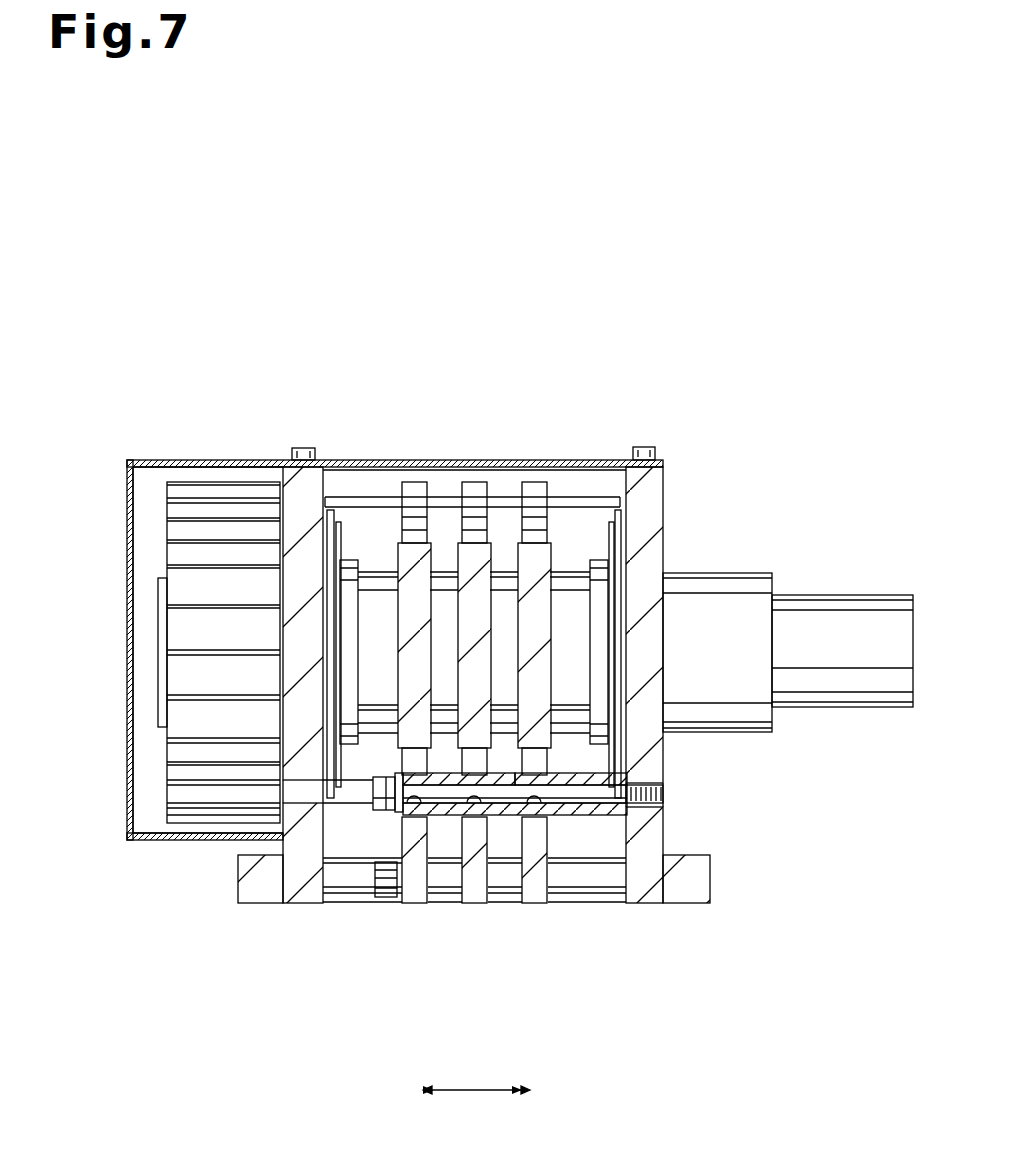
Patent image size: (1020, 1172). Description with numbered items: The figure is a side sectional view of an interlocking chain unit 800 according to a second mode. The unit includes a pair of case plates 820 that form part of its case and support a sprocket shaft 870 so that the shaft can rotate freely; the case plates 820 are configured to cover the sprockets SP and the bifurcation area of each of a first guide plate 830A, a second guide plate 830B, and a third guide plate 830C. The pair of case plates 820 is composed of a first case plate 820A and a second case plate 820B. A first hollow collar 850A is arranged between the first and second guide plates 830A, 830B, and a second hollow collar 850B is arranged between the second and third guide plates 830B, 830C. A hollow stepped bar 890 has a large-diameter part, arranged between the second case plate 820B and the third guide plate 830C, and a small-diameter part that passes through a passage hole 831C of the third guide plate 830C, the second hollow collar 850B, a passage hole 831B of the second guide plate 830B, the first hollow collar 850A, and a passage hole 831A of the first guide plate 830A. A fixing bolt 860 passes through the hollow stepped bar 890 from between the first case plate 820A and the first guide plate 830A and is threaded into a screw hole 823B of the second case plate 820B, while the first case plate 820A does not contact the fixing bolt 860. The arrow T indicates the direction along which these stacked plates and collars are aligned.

The interlocking chain unit 800 is at (226, 313).
The pair of case plates 820 is at (395, 643).
The first case plate 820A is at (312, 492).
The second case plate 820B is at (648, 533).
The screw hole 823B is at (663, 793).
The first guide plate 830A is at (413, 903).
The second guide plate 830B is at (468, 903).
The third guide plate 830C is at (530, 903).
The passage hole 831A is at (433, 903).
The passage hole 831B is at (492, 903).
The passage hole 831C is at (557, 903).
The first hollow collar 850A is at (445, 775).
The second hollow collar 850B is at (598, 778).
The fixing bolt 860 is at (385, 813).
The sprocket shaft 870 is at (564, 603).
The hollow stepped bar 890 is at (613, 768).
The sprockets SP is at (492, 557).
The thickness direction T is at (476, 1104).